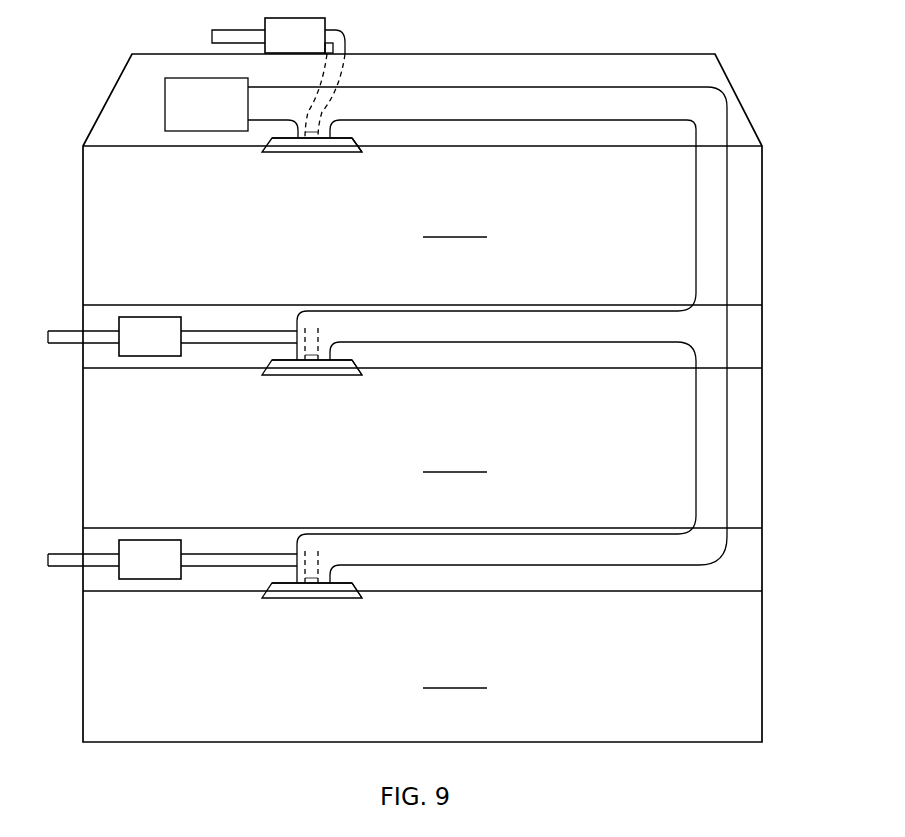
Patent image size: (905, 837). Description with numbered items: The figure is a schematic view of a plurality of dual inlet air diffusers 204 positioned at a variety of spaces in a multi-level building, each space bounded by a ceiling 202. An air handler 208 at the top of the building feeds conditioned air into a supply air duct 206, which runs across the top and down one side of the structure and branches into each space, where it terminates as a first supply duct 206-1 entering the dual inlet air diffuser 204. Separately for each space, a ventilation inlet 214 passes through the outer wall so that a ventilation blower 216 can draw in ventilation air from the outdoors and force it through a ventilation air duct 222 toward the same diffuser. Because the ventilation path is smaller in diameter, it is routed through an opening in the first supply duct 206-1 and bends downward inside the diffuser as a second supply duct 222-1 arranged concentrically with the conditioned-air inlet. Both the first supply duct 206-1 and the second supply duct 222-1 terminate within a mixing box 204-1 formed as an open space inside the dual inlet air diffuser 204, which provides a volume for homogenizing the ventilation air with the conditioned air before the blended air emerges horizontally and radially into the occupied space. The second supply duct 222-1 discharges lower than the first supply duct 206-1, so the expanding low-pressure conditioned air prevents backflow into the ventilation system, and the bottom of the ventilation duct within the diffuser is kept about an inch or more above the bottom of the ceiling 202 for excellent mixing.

The ceiling 202 is at (616, 148).
The dual inlet air diffuser 204 is at (250, 152).
The mixing box 204-1 is at (312, 154).
The supply air duct 206 is at (728, 233).
The first supply duct 206-1 is at (356, 142).
The air handler 208 is at (188, 116).
The ventilation inlet 214 is at (212, 36).
The ventilation blower 216 is at (277, 49).
The ventilation air duct 222 is at (347, 43).
The second supply duct 222-1 is at (326, 106).